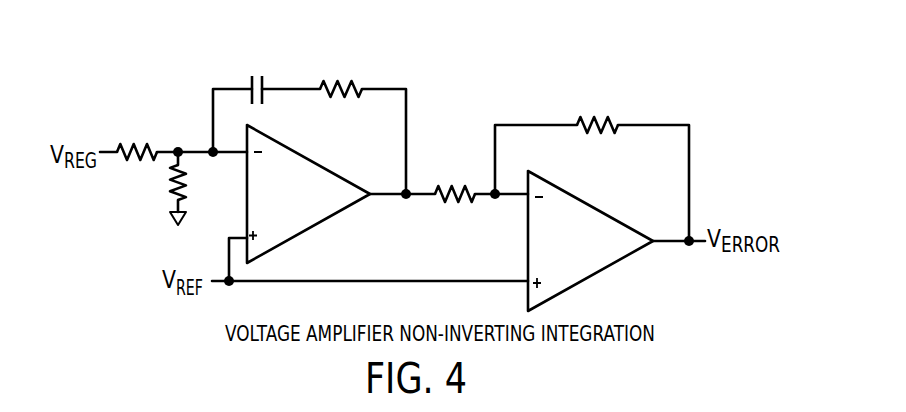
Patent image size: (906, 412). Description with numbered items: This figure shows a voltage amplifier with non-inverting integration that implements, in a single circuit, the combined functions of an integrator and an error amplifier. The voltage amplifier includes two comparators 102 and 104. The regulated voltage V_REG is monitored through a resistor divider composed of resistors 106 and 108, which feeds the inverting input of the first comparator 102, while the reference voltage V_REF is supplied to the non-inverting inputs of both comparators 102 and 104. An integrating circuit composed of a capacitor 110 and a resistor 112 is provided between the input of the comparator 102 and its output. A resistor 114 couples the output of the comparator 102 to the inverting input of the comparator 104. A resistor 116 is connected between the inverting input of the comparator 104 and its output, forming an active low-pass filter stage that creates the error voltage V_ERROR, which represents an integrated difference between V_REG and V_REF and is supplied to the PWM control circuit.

The comparator 102 is at (298, 152).
The comparator 104 is at (603, 212).
The resistor 106 is at (135, 141).
The resistor 108 is at (168, 193).
The capacitor 110 is at (250, 81).
The resistor 112 is at (338, 79).
The resistor 114 is at (457, 187).
The resistor 116 is at (598, 120).